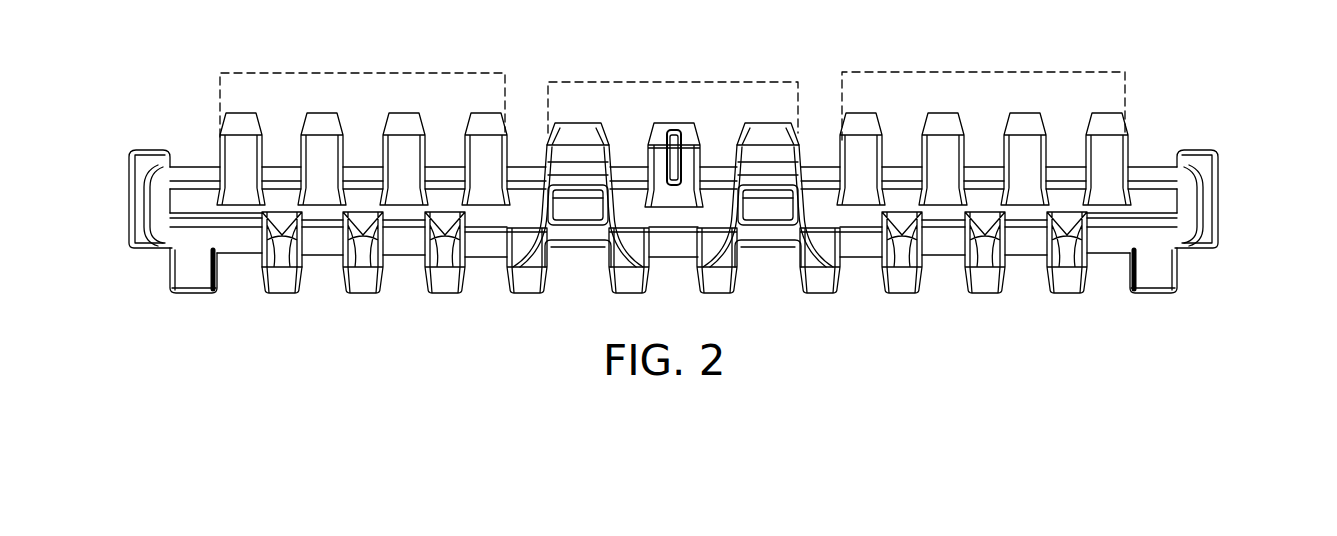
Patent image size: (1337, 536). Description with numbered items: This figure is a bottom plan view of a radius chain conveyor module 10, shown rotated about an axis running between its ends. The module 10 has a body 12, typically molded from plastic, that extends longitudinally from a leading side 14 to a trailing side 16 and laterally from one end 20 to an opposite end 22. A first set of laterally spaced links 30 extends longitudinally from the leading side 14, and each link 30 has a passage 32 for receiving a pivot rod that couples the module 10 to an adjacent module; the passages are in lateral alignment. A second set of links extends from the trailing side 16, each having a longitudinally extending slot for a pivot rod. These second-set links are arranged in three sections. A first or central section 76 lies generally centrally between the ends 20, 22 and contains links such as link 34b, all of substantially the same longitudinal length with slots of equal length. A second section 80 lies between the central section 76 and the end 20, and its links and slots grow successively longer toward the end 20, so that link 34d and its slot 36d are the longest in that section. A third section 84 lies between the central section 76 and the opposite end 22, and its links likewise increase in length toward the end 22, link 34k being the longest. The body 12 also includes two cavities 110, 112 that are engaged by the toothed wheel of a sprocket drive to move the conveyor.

The radius chain conveyor module 10 is at (1218, 100).
The body 12 is at (408, 216).
The one side 14 is at (327, 256).
The opposite side 16 is at (357, 166).
The one end 20 is at (128, 186).
The opposite end 22 is at (1220, 218).
The links 30 is at (284, 290).
The passage 32 is at (262, 268).
The link 34b is at (673, 122).
The link 34d is at (248, 128).
The link 34k is at (1098, 123).
The slot 36d is at (218, 148).
The first or central section 76 is at (565, 82).
The second section 80 is at (220, 76).
The third section 84 is at (1130, 88).
The cavity 110 is at (578, 208).
The cavity 112 is at (783, 208).